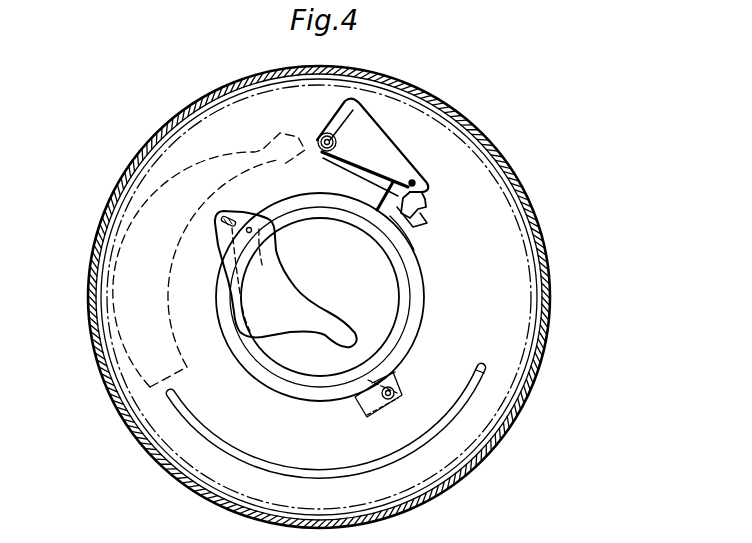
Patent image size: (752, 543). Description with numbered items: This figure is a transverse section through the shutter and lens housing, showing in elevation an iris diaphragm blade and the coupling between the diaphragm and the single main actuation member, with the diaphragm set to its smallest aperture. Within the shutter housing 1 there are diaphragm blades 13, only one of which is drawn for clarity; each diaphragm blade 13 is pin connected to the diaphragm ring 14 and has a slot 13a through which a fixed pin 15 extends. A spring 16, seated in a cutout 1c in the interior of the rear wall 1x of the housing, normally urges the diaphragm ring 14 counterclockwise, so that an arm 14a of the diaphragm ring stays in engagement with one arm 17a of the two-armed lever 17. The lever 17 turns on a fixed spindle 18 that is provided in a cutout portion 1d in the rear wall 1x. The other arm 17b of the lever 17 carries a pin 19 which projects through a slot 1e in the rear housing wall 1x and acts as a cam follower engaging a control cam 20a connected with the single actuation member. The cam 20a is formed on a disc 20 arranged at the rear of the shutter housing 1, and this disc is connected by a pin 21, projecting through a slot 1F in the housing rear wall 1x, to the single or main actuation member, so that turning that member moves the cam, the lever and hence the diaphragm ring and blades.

The shutter housing 1 is at (480, 150).
The rear wall 1x is at (200, 455).
The cutout 1c is at (397, 380).
The cutout portion 1d is at (353, 153).
The slot 1e is at (334, 134).
The slot 1F is at (177, 410).
The diaphragm blade 13 is at (292, 297).
The slot 13a is at (227, 220).
The diaphragm ring 14 is at (423, 287).
The arm 14a is at (405, 235).
The fixed pin 15 is at (218, 218).
The spring 16 is at (395, 397).
The two-armed lever 17 is at (427, 177).
The arm 17a is at (413, 200).
The arm 17b is at (398, 165).
The fixed spindle 18 is at (445, 183).
The pin 19 is at (320, 138).
The disc 20 is at (230, 130).
The control cam 20a is at (125, 299).
The pin 21 is at (484, 378).